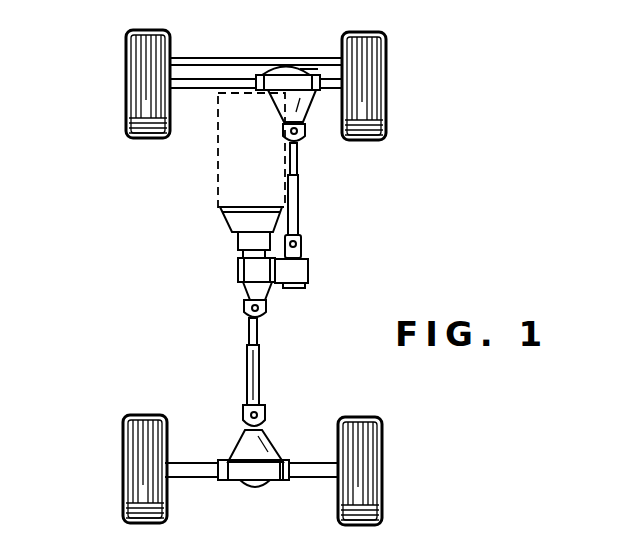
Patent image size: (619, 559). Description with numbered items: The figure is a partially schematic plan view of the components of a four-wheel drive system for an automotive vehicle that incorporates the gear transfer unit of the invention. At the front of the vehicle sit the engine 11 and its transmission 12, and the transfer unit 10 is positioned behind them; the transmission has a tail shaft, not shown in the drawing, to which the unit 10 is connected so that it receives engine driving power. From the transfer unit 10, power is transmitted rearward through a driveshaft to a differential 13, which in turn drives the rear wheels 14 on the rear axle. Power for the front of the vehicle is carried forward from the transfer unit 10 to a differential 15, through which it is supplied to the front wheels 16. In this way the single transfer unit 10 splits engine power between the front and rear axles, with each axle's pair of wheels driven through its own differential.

The transfer unit 10 is at (238, 272).
The engine 11 is at (220, 133).
The transmission 12 is at (235, 218).
The differential 13 is at (278, 448).
The rear wheels 14 is at (123, 515).
The differential 15 is at (302, 100).
The front wheels 16 is at (128, 32).